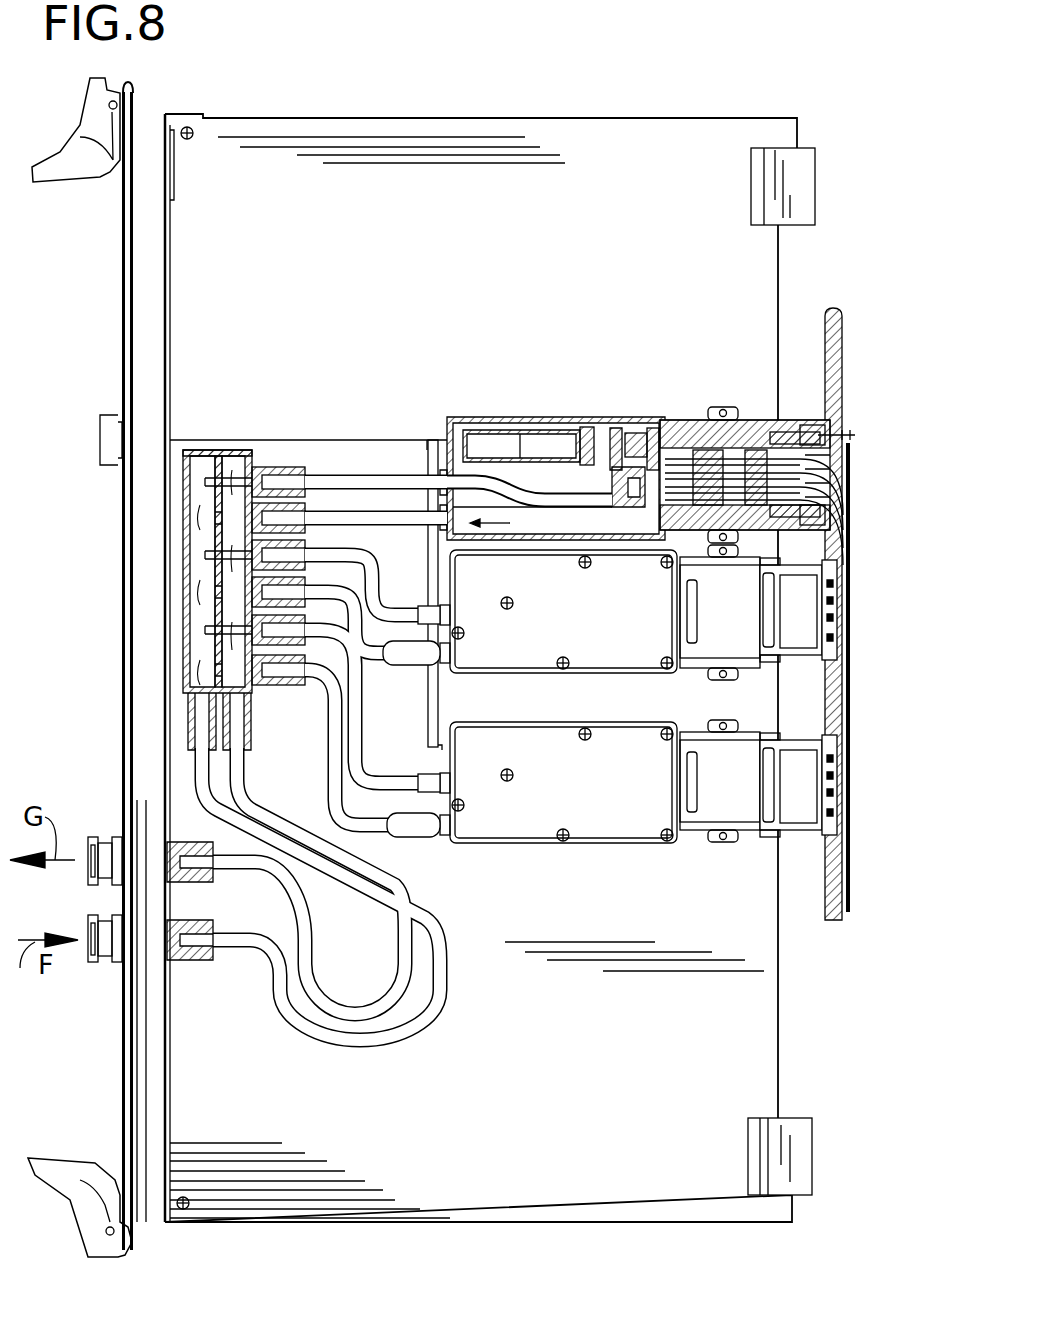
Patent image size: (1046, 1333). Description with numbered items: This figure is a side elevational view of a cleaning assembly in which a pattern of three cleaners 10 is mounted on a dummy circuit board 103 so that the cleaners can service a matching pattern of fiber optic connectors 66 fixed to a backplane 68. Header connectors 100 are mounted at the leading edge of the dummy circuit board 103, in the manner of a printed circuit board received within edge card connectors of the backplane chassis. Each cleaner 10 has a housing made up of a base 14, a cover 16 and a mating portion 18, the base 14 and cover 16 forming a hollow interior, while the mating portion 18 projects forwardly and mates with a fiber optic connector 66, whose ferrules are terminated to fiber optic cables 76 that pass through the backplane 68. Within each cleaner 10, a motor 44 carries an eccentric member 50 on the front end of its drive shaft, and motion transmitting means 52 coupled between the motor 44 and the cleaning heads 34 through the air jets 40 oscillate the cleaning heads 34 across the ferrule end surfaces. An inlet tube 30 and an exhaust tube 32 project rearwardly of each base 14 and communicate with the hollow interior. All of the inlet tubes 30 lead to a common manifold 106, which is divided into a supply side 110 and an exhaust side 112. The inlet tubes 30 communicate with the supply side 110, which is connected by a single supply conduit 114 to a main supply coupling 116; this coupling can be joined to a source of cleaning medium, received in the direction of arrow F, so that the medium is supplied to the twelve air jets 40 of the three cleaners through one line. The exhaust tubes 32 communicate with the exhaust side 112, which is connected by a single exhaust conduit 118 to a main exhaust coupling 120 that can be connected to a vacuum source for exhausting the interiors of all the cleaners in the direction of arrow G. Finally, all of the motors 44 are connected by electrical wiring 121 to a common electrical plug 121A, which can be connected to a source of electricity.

The cleaner 10 is at (554, 613).
The base 14 is at (463, 428).
The cover 16 is at (594, 613).
The mating portion 18 is at (768, 588).
The inlet tube 30 is at (357, 587).
The exhaust tube 32 is at (395, 495).
The cleaning heads 34 is at (747, 447).
The air jets 40 is at (664, 434).
The motor 44 is at (497, 445).
The eccentric member 50 is at (613, 432).
The motion transmitting means 52 is at (633, 420).
The fiber optic connector 66 is at (797, 428).
The backplane 68 is at (835, 322).
The fiber optic cables 76 is at (850, 498).
The header connectors 100 is at (793, 173).
The dummy circuit board 103 is at (513, 214).
The common manifold 106 is at (205, 440).
The supply side 110 is at (225, 450).
The exhaust side 112 is at (184, 478).
The supply conduit 114 is at (363, 1048).
The main supply coupling 116 is at (117, 955).
The exhaust conduit 118 is at (290, 912).
The main exhaust coupling 120 is at (105, 850).
The electrical wiring 121 is at (287, 440).
The common electrical plug 121A is at (118, 442).